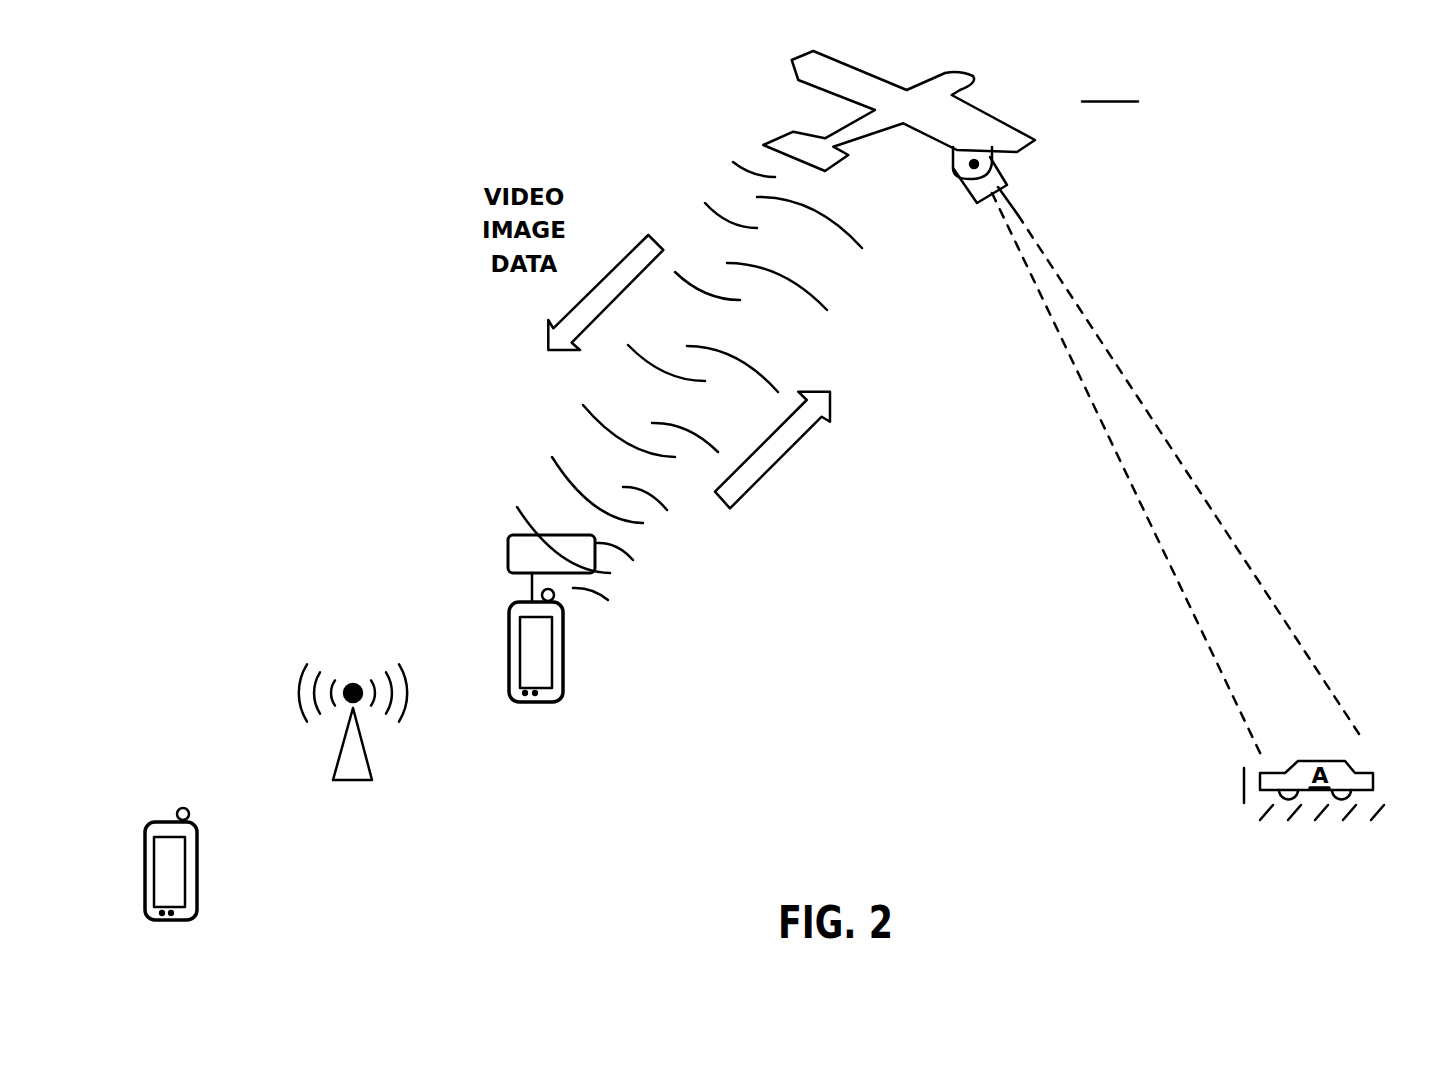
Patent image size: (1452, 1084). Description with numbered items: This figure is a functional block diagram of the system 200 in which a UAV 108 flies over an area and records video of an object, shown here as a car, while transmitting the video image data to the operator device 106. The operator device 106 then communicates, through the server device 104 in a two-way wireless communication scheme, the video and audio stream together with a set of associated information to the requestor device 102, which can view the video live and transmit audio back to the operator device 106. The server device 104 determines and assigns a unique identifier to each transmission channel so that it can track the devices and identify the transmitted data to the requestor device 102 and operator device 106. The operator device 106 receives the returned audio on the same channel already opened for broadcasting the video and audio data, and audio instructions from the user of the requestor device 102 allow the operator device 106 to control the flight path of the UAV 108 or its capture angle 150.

The requestor device 102 is at (165, 921).
The server device 104 is at (352, 777).
The operator device 106 is at (532, 703).
The UAV 108 is at (798, 80).
The capture angle 150 is at (993, 166).
The tracking system 200 is at (1334, 95).